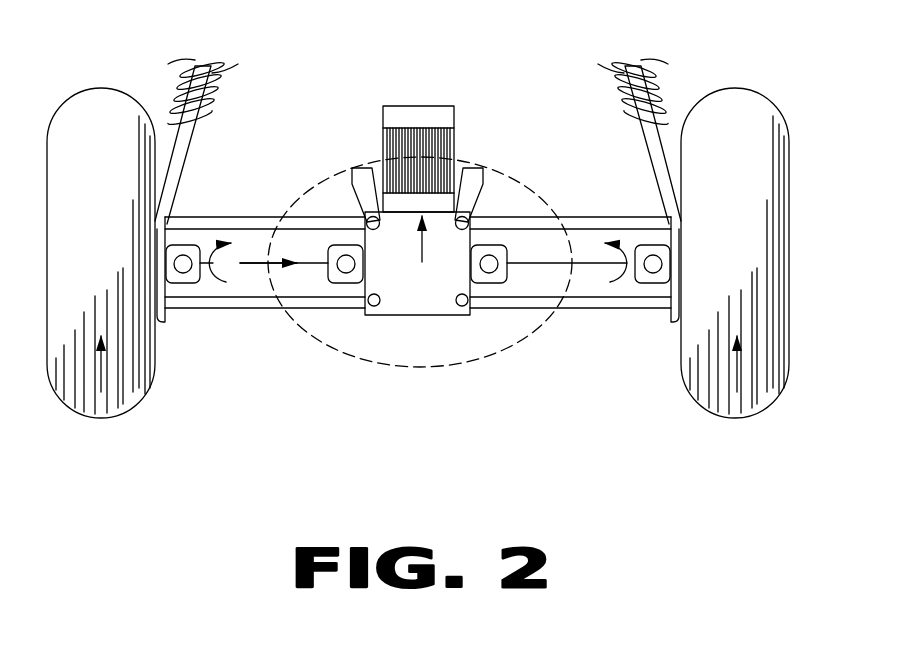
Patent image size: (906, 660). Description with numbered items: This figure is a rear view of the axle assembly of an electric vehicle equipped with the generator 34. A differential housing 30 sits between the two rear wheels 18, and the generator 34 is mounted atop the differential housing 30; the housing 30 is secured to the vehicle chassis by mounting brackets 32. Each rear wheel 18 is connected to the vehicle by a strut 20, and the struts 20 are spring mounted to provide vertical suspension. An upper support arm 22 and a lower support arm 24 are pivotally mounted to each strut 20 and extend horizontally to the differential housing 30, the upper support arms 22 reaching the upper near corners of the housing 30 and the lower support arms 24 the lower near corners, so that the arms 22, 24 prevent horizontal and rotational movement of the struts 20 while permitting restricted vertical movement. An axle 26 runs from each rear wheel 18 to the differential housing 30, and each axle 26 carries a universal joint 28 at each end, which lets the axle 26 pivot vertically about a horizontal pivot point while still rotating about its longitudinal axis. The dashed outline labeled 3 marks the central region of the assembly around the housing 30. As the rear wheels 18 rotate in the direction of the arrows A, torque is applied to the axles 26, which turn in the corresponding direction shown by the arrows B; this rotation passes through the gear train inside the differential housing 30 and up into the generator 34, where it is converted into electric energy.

The section line / sectioned region 3 is at (318, 342).
The rear wheel 18 is at (98, 118).
The strut 20 is at (178, 158).
The upper support arm 22 is at (347, 220).
The lower support arm 24 is at (340, 300).
The axle 26 is at (275, 238).
The universal joint 28 is at (183, 262).
The differential housing 30 is at (418, 302).
The mounting bracket 32 is at (357, 167).
The generator 34 is at (418, 150).
The arrows indicating rotation of rear wheels A is at (101, 388).
The arrows indicating rotation of axles B is at (222, 286).